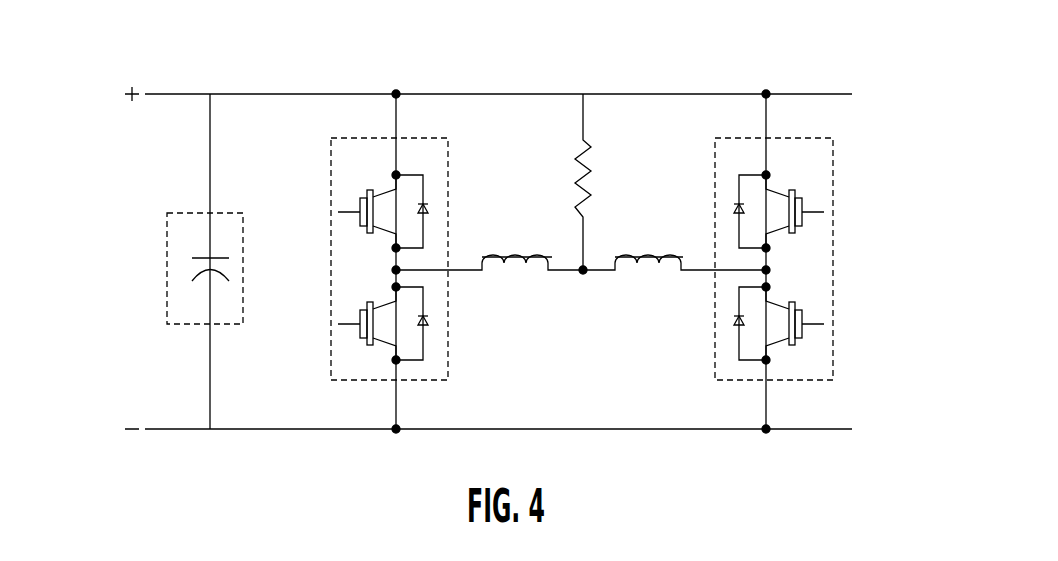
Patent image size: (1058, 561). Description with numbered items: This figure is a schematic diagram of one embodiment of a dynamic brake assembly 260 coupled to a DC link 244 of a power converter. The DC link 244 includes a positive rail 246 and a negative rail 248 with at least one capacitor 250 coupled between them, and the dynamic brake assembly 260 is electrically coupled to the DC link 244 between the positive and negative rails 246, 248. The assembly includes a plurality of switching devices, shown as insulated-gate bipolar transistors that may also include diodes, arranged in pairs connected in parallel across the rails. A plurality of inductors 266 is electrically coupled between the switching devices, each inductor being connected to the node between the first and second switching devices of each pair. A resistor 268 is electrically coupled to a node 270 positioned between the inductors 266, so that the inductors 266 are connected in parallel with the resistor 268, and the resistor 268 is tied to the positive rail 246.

The DC link 244 is at (96, 98).
The positive rail 246 is at (340, 94).
The negative rail 248 is at (310, 432).
The capacitor 250 is at (167, 272).
The dynamic brake assembly 260 is at (714, 52).
The inductors 266 is at (630, 289).
The resistor 268 is at (560, 183).
The node 270 is at (583, 275).